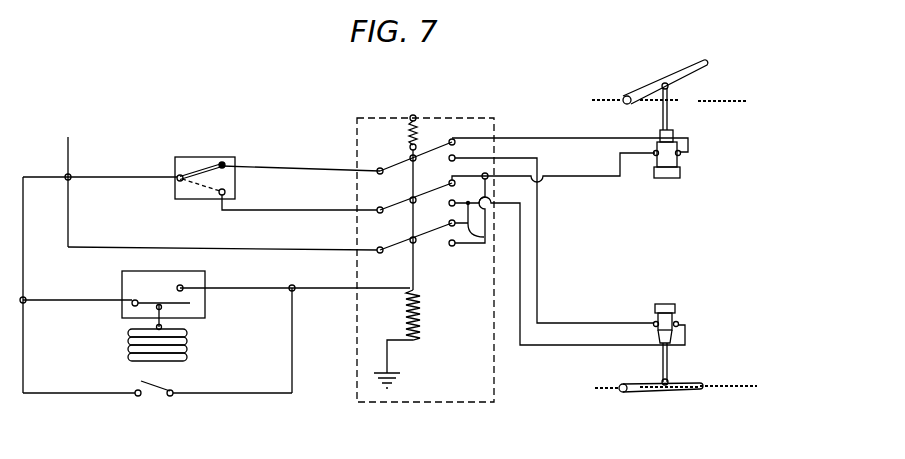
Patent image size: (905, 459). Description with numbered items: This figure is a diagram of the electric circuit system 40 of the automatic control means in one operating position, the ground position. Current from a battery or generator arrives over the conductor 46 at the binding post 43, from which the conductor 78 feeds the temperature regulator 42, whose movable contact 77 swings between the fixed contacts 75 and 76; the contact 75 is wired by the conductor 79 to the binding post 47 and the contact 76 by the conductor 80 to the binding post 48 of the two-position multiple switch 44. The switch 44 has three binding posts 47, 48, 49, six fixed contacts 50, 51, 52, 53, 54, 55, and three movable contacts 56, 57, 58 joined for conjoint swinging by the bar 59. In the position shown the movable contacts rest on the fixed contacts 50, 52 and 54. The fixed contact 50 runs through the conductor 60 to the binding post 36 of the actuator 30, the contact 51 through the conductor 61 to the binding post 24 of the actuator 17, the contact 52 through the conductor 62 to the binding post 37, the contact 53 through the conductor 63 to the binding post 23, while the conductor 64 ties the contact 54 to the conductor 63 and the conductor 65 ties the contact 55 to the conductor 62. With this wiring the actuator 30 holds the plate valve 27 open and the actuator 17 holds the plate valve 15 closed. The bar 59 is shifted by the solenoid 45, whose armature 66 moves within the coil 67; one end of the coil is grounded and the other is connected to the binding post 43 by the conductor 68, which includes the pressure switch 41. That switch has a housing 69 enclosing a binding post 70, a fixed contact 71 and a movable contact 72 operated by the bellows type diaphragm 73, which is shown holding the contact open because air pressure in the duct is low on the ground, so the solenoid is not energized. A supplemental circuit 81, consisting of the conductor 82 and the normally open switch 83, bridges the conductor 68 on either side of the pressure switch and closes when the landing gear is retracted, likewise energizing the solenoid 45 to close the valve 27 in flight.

The plate valve 15 is at (660, 392).
The actuator 17 is at (674, 304).
The binding post 23 is at (679, 322).
The binding post 24 is at (654, 322).
The plate valve 27 is at (664, 82).
The actuator 30 is at (668, 186).
The binding post 36 is at (681, 156).
The binding post 37 is at (655, 158).
The electric circuit system 40 is at (534, 131).
The pressure switch 41 is at (171, 310).
The temperature regulator 42 is at (231, 154).
The binding post 43 is at (80, 164).
The 2-position multiple switch 44 is at (439, 129).
The solenoid 45 is at (425, 333).
The conductor 46 is at (66, 157).
The binding post 47 is at (379, 175).
The binding post 48 is at (372, 220).
The binding post 49 is at (225, 260).
The fixed contact 50 is at (457, 139).
The fixed contact 51 is at (456, 158).
The fixed contact 52 is at (449, 183).
The fixed contact 53 is at (440, 206).
The fixed contact 54 is at (439, 225).
The fixed contact 55 is at (452, 247).
The movable contact 56 is at (392, 164).
The movable contact 57 is at (401, 205).
The movable contact 58 is at (416, 244).
The bar 59 is at (414, 278).
The conductor 60 is at (580, 137).
The conductor 61 is at (538, 168).
The conductor 62 is at (568, 178).
The conductor 63 is at (522, 258).
The conductor 64 is at (484, 237).
The conductor 65 is at (473, 248).
The armature 66 is at (416, 341).
The coil 67 is at (421, 305).
The conductor 68 is at (25, 268).
The housing 69 is at (132, 272).
The binding post 70 is at (132, 301).
The fixed contact 71 is at (182, 287).
The movable contact 72 is at (150, 302).
The bellows type diaphragm 73 is at (186, 356).
The fixed contact 75 is at (228, 164).
The fixed contact 76 is at (226, 192).
The movable contact 77 is at (212, 168).
The conductor 78 is at (100, 163).
The conductor 79 is at (178, 175).
The conductor 80 is at (318, 211).
The supplemental circuit 81 is at (224, 399).
The conductor 82 is at (68, 395).
The normally open switch 83 is at (156, 389).